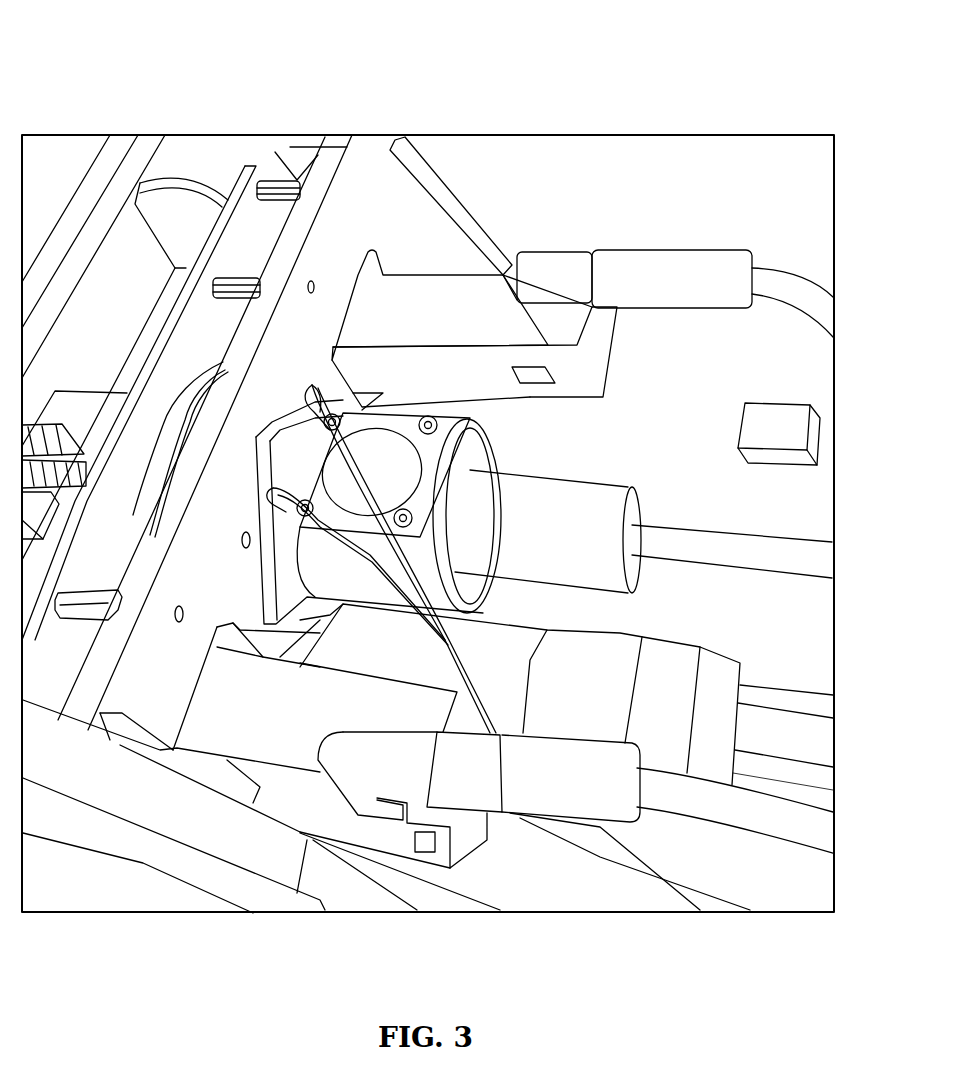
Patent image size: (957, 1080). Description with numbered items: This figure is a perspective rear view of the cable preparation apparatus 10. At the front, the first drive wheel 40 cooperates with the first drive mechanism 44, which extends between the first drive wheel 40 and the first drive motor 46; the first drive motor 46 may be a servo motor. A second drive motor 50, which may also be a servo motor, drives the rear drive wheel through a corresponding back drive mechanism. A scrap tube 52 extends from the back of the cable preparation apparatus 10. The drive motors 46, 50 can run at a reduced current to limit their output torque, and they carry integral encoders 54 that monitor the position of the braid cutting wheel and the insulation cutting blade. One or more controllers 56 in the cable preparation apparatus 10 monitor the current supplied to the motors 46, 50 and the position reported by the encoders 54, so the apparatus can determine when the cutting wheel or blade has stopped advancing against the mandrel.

The cable preparation apparatus 10 is at (563, 95).
The first drive wheel 40 is at (179, 426).
The first drive mechanism 44 is at (133, 515).
The first drive motor 46 is at (273, 722).
The second drive motor 50 is at (463, 290).
The scrap tube 52 is at (472, 446).
The encoders 54 is at (538, 368).
The controllers 56 is at (792, 433).